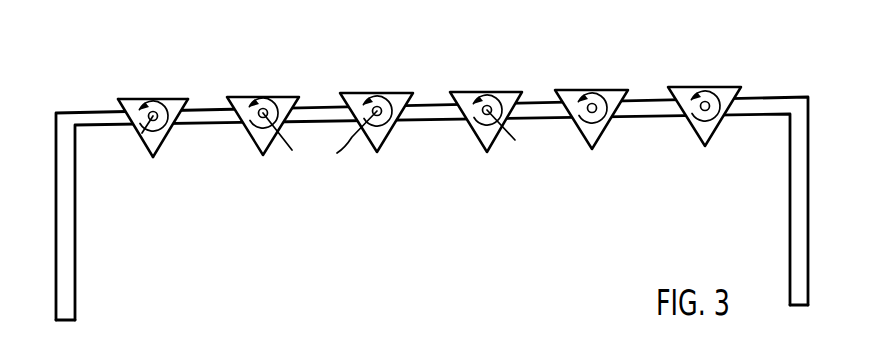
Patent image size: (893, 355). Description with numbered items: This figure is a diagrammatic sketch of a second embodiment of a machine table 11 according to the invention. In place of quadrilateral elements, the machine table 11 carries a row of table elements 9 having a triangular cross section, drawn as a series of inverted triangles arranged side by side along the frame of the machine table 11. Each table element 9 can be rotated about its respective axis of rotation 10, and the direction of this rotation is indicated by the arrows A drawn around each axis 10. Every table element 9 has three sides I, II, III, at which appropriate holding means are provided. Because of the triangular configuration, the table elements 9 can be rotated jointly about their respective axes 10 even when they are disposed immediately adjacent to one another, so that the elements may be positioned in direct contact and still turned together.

The table element 9 is at (434, 105).
The axis of rotation 10 is at (159, 128).
The machine table 11 is at (804, 84).
The arrows A is at (617, 89).
The side I is at (201, 108).
The side II is at (138, 134).
The side III is at (172, 134).